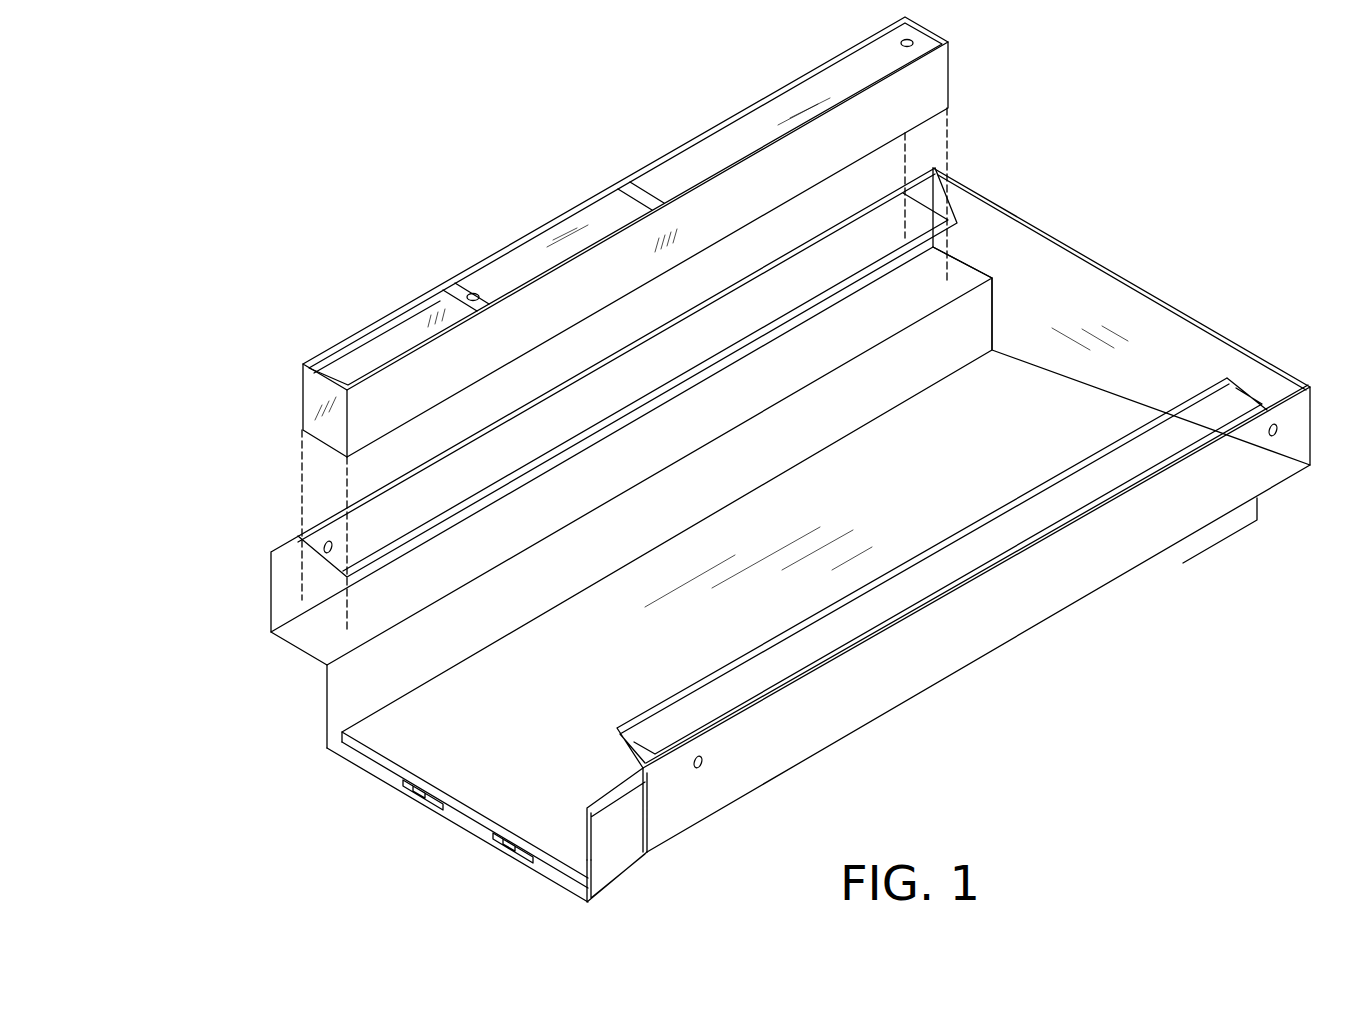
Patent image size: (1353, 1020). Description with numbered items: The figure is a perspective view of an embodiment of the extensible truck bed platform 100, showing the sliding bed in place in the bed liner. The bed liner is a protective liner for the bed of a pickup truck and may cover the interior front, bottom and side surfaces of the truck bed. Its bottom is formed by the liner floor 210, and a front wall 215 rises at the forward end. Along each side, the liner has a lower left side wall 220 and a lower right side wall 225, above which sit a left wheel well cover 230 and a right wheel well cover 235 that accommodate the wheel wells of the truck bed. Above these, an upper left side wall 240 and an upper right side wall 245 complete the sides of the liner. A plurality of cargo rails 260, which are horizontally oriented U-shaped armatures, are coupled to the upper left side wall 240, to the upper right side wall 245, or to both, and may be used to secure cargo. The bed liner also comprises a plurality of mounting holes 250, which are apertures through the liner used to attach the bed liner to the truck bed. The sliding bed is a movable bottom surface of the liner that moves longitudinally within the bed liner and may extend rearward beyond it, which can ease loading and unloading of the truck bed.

The extensible truck bed platform 100 is at (370, 110).
The liner floor 210 is at (553, 878).
The front wall 215 is at (1093, 280).
The lower left side wall 220 is at (347, 688).
The lower right side wall 225 is at (607, 873).
The left wheel well cover 230 is at (312, 636).
The right wheel well cover 235 is at (632, 815).
The upper left side wall 240 is at (283, 590).
The upper right side wall 245 is at (1158, 533).
The mounting holes 250 is at (327, 541).
The cargo rails 260 is at (417, 528).